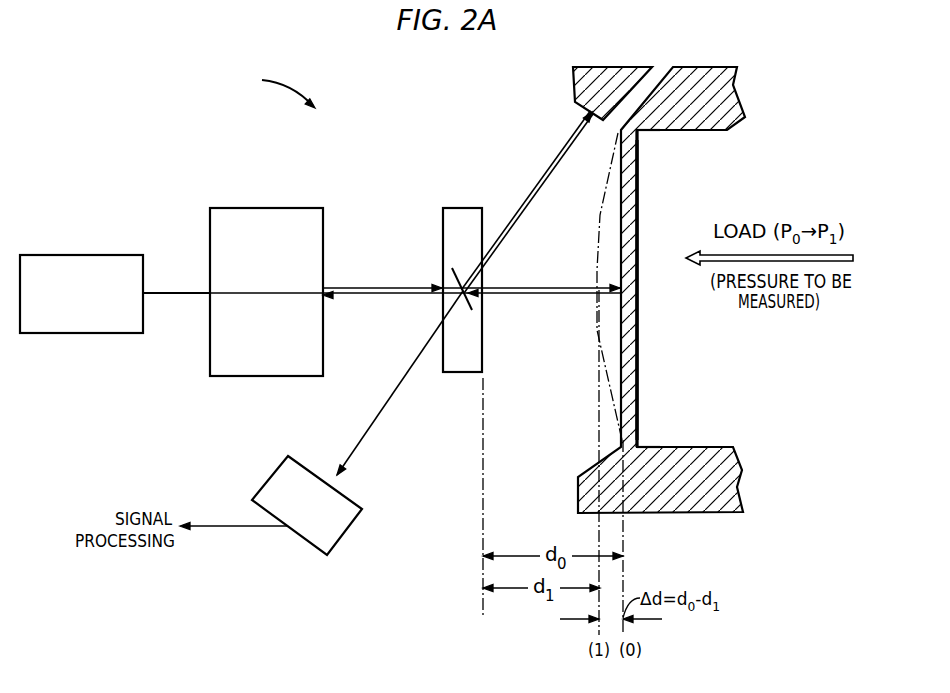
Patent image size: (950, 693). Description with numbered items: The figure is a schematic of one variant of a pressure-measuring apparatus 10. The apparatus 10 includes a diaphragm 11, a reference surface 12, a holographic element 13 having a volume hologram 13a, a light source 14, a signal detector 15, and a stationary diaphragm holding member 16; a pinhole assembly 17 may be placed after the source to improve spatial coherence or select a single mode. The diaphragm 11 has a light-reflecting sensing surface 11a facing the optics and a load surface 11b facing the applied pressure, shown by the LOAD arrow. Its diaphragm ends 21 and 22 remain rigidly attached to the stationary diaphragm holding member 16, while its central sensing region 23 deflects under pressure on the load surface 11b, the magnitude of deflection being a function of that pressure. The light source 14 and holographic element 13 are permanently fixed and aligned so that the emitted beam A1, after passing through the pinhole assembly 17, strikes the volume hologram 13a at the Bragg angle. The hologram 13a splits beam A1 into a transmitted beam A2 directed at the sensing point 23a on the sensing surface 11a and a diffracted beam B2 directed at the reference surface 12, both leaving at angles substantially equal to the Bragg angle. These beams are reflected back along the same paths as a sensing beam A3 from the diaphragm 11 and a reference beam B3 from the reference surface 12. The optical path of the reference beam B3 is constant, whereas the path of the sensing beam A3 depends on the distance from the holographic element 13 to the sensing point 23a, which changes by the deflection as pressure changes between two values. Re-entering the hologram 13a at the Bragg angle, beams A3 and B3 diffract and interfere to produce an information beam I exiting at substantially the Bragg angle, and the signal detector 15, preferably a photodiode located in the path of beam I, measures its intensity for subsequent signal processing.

The apparatus 10 is at (277, 89).
The diaphragm 11 is at (637, 383).
The sensing surface 11a is at (618, 205).
The load surface 11b is at (640, 213).
The reference surface 12 is at (593, 108).
The holographic element 13 is at (458, 212).
The volume hologram 13a is at (453, 270).
The light source 14 is at (70, 258).
The signal detector 15 is at (343, 529).
The stationary diaphragm holding member 16 is at (730, 96).
The pinhole assembly 17 is at (259, 212).
The diaphragm end 21 is at (640, 133).
The diaphragm end 22 is at (638, 446).
The central sensing region 23 is at (596, 273).
The sensing point 23a is at (637, 300).
The beam A1 is at (343, 287).
The beam A2 is at (513, 287).
The sensing beam A3 is at (500, 297).
The beam B2 is at (562, 145).
The reference beam B3 is at (560, 157).
The information beam I is at (384, 410).